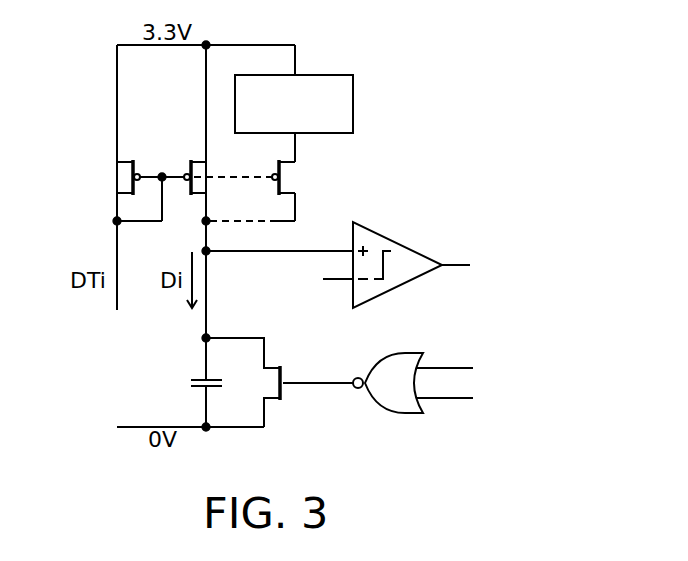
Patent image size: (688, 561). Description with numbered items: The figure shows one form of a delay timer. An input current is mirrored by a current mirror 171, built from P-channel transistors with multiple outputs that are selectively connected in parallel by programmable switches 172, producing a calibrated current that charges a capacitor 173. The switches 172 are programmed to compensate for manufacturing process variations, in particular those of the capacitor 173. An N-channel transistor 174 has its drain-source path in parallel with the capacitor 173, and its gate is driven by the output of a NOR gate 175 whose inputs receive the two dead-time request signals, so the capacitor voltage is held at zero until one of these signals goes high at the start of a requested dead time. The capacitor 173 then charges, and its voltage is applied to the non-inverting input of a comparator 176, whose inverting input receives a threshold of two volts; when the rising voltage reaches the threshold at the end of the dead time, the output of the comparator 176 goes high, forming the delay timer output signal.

The current mirror 171 is at (170, 163).
The programmable switches 172 is at (347, 98).
The capacitor 173 is at (187, 373).
The N-channel transistor 174 is at (290, 370).
The NOR gate 175 is at (382, 373).
The comparator 176 is at (400, 252).